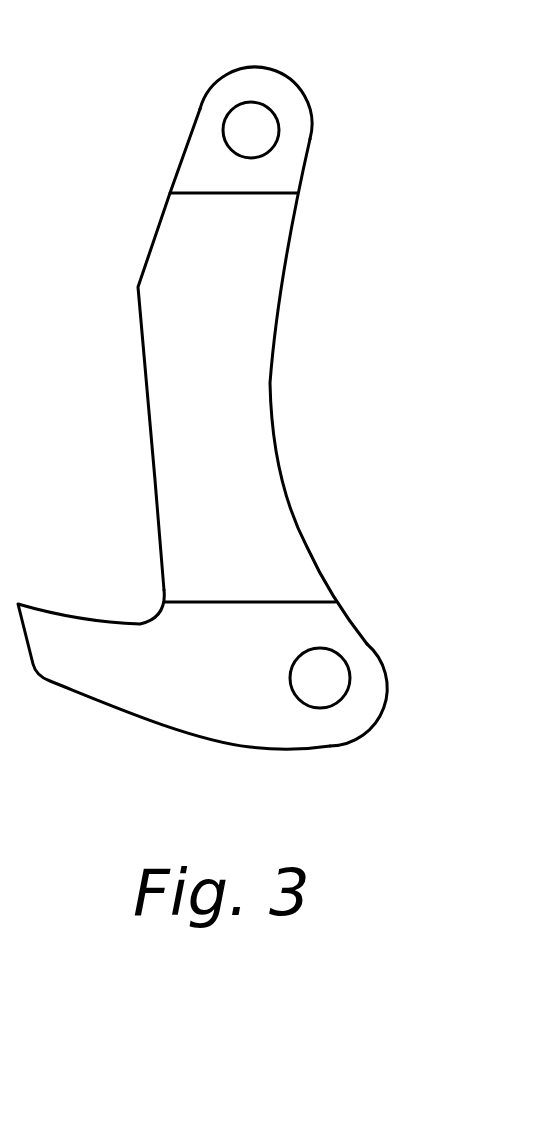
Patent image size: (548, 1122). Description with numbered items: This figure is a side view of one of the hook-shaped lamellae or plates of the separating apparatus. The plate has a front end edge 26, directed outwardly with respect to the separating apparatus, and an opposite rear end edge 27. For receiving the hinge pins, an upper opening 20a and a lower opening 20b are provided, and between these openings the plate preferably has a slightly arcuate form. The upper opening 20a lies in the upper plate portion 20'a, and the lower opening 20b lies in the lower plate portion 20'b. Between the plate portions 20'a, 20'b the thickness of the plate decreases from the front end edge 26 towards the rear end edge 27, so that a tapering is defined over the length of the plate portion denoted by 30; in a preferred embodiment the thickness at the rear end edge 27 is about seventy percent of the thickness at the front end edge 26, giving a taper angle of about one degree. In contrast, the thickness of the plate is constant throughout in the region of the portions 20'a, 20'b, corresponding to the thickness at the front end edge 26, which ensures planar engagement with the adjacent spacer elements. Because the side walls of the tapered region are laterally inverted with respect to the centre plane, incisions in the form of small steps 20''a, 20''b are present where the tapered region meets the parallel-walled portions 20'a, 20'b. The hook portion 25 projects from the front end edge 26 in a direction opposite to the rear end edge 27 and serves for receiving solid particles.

The plate portion 20'a is at (274, 86).
The upper opening 20a is at (268, 128).
The small step 20''a is at (288, 215).
The front end edge 26 is at (142, 360).
The rear end edge 27 is at (275, 313).
The plate portion 30 is at (245, 455).
The small step 20''b is at (295, 556).
The lower opening 20b is at (332, 673).
The plate portion 20'b is at (367, 723).
The hook portion 25 is at (107, 693).